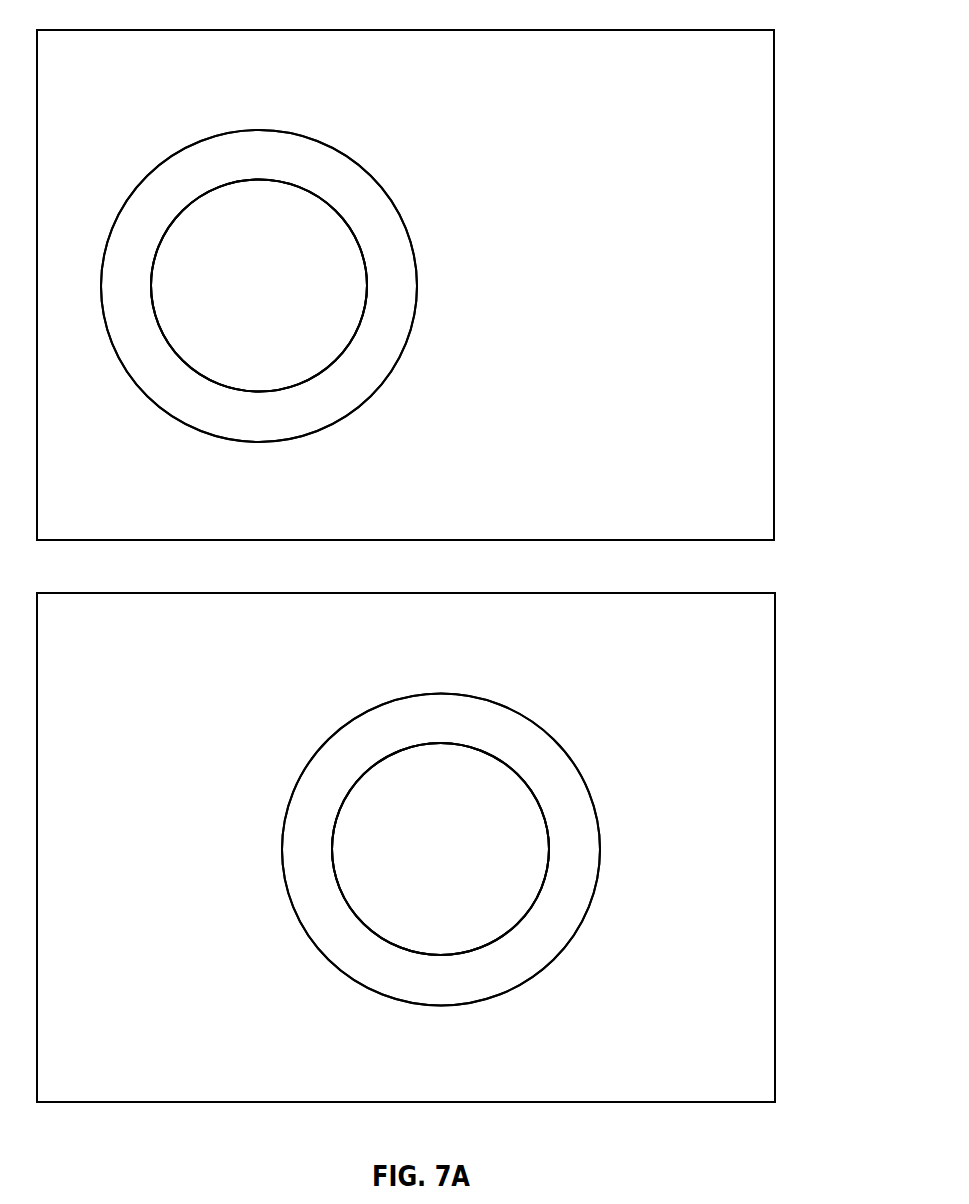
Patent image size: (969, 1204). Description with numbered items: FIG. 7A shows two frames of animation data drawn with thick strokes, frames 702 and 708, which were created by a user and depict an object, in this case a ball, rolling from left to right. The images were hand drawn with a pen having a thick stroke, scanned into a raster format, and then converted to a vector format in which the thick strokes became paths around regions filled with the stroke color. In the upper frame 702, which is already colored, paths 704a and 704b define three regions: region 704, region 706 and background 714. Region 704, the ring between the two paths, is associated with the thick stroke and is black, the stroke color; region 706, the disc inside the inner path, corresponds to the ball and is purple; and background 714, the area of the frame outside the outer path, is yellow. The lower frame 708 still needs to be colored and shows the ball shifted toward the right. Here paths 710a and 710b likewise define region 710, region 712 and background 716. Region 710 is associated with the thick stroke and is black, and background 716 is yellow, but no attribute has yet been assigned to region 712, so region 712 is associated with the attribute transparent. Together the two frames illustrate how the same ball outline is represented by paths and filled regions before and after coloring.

The frame 702 is at (774, 480).
The region 704 is at (280, 424).
The path 704a is at (353, 410).
The path 704b is at (363, 323).
The region 706 is at (280, 298).
The background 714 is at (670, 288).
The frame 708 is at (775, 1042).
The region 710 is at (461, 986).
The path 710a is at (535, 973).
The path 710b is at (545, 885).
The region 712 is at (461, 862).
The background 716 is at (695, 812).